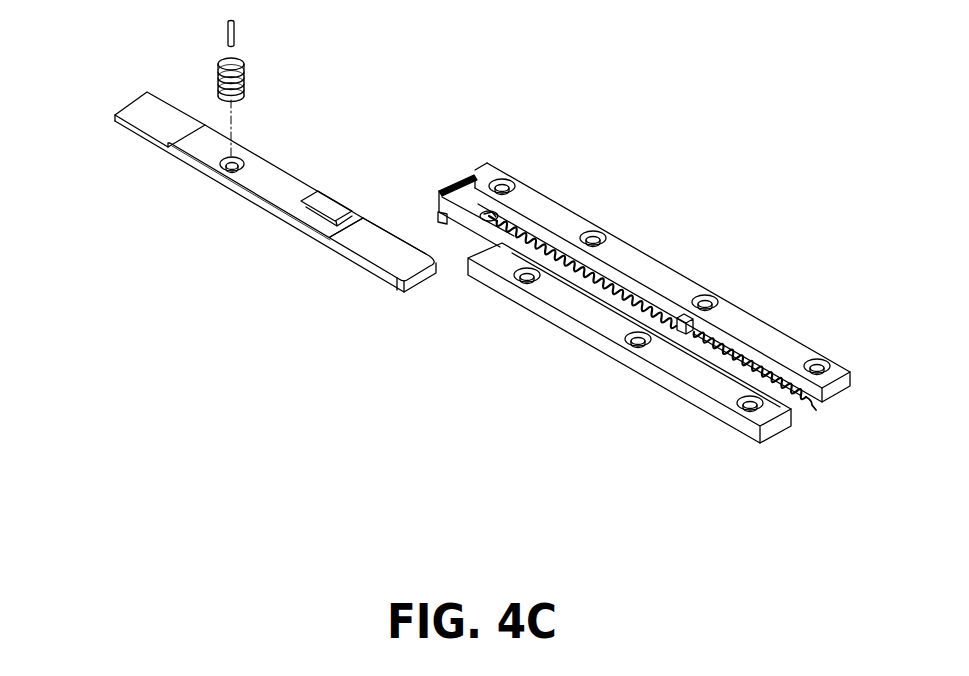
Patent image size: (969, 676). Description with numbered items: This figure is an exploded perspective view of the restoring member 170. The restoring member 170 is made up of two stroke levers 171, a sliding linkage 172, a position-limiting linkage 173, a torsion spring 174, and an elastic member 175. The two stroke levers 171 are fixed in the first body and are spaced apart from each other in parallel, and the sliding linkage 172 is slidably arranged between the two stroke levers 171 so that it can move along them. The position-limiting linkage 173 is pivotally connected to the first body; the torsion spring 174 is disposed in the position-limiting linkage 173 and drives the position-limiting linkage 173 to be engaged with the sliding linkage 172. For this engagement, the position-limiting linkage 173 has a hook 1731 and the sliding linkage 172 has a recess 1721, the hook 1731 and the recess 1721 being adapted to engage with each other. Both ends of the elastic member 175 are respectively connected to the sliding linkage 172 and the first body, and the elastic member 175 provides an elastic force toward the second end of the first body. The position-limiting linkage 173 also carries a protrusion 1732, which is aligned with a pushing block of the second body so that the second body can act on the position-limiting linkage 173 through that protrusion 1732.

The restoring member 170 is at (100, 364).
The stroke levers 171 is at (763, 332).
The sliding linkage 172 is at (468, 220).
The recess 1721 is at (450, 228).
The position-limiting linkage 173 is at (242, 170).
The hook 1731 is at (407, 238).
The protrusion 1732 is at (136, 99).
The torsion spring 174 is at (244, 83).
The elastic member 175 is at (817, 418).